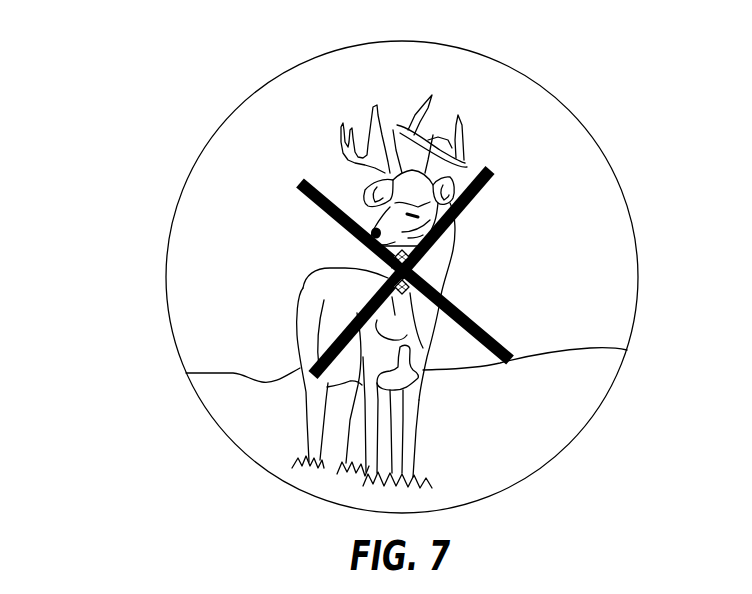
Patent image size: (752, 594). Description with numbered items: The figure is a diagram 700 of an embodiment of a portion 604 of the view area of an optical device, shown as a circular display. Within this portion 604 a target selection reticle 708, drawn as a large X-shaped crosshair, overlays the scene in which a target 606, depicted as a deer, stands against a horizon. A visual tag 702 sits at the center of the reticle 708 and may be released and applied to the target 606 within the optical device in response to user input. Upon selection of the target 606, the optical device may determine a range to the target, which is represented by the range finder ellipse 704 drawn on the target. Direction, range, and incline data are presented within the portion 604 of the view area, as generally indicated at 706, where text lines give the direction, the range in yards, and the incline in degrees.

The diagram 700 is at (110, 52).
The portion of the view area 604 is at (188, 299).
The target 606 is at (303, 288).
The target selection reticle 708 is at (297, 183).
The visual tag 702 is at (388, 266).
The range finder ellipse 704 is at (428, 348).
The direction, range, and incline data 706 is at (647, 219).